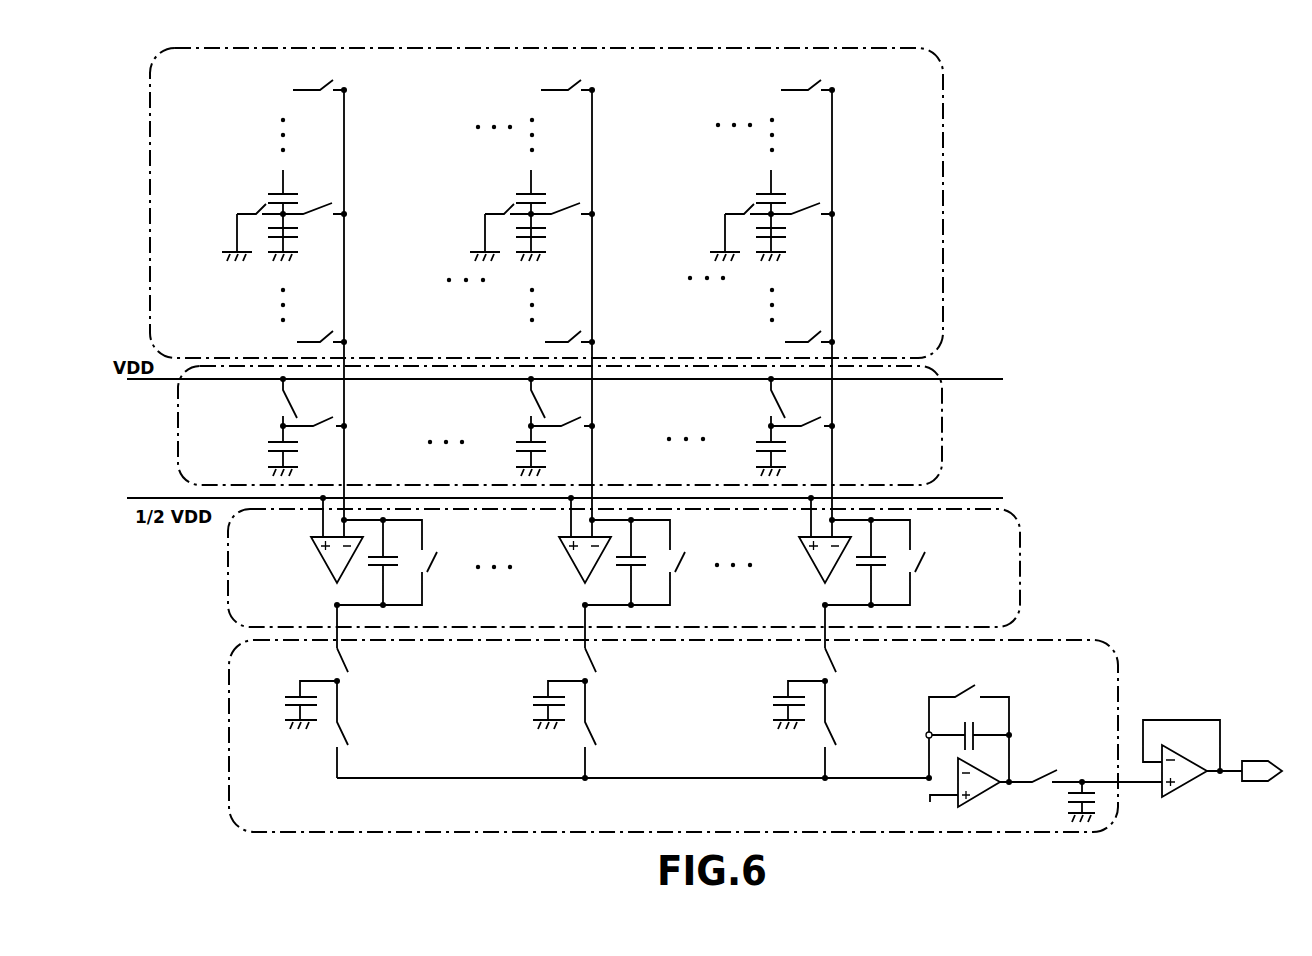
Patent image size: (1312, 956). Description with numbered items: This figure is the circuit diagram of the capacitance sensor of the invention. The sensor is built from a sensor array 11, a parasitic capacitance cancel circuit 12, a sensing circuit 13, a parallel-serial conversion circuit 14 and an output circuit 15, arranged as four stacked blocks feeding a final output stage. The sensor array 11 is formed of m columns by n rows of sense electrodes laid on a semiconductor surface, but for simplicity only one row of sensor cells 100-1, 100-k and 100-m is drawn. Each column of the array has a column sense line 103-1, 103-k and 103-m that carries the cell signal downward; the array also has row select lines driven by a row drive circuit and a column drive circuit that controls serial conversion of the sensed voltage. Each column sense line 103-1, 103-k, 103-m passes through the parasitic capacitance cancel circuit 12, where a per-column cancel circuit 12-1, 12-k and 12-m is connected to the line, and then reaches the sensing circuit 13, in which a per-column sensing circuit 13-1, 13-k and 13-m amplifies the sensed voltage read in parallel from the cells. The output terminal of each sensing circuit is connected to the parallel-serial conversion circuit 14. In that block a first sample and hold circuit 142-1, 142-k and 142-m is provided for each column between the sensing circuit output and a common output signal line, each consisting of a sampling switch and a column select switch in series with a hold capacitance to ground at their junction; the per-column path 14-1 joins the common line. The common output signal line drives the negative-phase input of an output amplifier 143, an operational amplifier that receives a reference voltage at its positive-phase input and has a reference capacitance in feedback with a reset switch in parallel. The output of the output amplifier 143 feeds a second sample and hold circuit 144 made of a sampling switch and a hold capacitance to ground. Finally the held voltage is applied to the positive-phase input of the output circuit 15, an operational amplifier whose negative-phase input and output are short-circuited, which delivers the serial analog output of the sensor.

The sensor array 11 is at (943, 167).
The sensor cell 100-1 is at (236, 181).
The sensor cell 100-k is at (485, 181).
The sensor cell 100-m is at (722, 181).
The column sense line 103-1 is at (345, 317).
The column sense line 103-k is at (593, 317).
The column sense line 103-m is at (833, 317).
The parasitic capacitance cancel circuit 12 is at (942, 423).
The parasitic capacitance cancel circuit 12-1 is at (252, 431).
The parasitic capacitance cancel circuit 12-k is at (508, 428).
The parasitic capacitance cancel circuit 12-m is at (750, 425).
The sensing circuit 13 is at (1020, 540).
The sensing circuit 13-1 is at (313, 573).
The sensing circuit 13-k is at (562, 572).
The sensing circuit 13-m is at (803, 568).
The parallel-serial conversion circuit 14 is at (1053, 637).
The parallel-serial conversion circuit 14-1 is at (467, 780).
The first sample & hold circuit 142-1 is at (354, 686).
The first sample & hold circuit 142-k is at (597, 685).
The first sample & hold circuit 142-m is at (845, 683).
The output amplifier 143 is at (990, 690).
The second sample & hold circuit 144 is at (1055, 799).
The output circuit 15 is at (1174, 713).